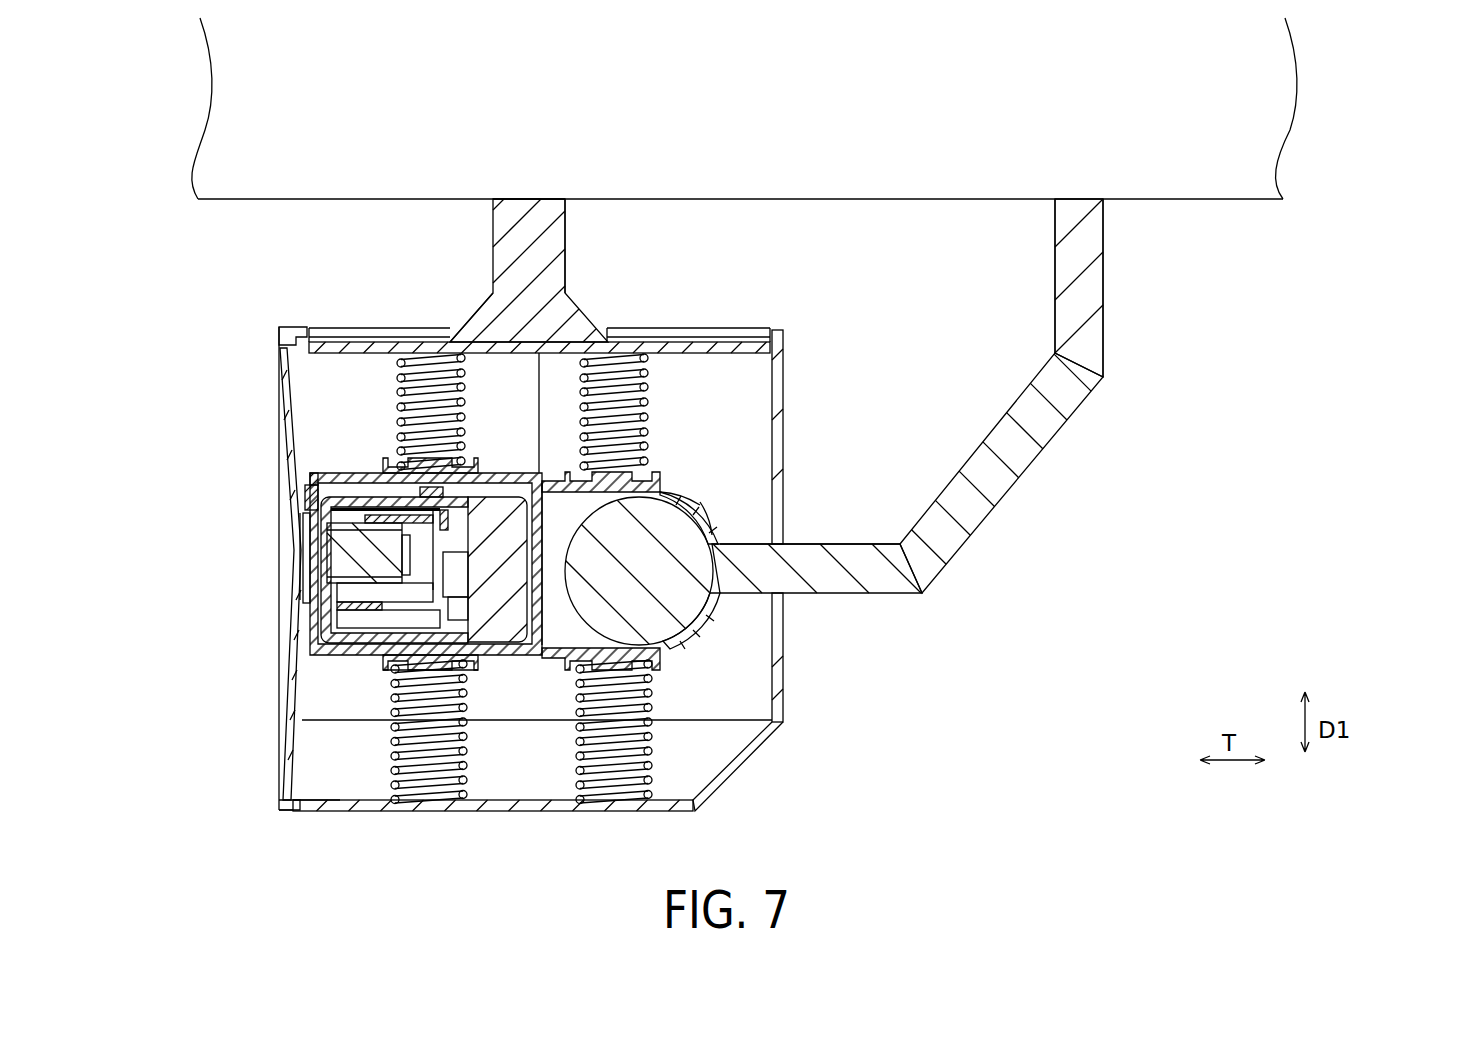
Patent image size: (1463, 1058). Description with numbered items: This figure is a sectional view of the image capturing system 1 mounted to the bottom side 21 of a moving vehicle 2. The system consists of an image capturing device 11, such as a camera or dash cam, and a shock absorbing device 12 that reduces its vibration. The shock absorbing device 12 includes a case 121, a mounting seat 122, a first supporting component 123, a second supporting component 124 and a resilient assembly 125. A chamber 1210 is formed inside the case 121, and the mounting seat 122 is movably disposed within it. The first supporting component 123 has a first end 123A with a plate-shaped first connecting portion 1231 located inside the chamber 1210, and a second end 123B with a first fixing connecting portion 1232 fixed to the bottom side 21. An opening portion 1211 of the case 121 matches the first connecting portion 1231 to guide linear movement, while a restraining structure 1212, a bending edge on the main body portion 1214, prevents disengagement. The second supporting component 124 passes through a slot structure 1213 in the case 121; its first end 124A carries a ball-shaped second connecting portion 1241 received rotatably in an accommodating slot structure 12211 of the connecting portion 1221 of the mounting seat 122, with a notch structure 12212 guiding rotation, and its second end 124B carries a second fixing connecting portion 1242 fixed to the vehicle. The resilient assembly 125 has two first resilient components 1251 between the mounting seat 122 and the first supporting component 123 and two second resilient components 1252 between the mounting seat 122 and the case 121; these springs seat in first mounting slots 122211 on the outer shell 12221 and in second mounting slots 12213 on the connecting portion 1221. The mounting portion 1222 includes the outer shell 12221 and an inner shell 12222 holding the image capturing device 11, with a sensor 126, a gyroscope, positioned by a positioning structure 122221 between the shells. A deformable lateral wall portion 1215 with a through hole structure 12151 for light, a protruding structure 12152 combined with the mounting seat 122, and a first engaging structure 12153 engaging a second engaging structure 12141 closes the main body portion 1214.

The image capturing system 1 is at (1045, 640).
The moving vehicle 2 is at (823, 151).
The bottom side of the moving vehicle 21 is at (1240, 199).
The image capturing device 11 is at (360, 548).
The shock absorbing device 12 is at (287, 312).
The case 121 is at (531, 558).
The chamber 1210 is at (714, 742).
The opening portion 1211 is at (733, 320).
The restraining structure 1212 is at (764, 330).
The slot structure 1213 is at (797, 488).
The main body portion 1214 is at (489, 811).
The second engaging structure 12141 is at (330, 811).
The lateral wall portion 1215 is at (290, 496).
The through hole structure 12151 is at (290, 570).
The protruding structure 12152 is at (305, 612).
The first engaging structure 12153 is at (297, 812).
The mounting seat 122 is at (489, 612).
The connecting portion 1221 is at (662, 650).
The accommodating slot structure 12211 is at (558, 628).
The notch structure 12212 is at (708, 515).
The second mounting slots 12213 is at (684, 484).
The mounting portion 1222 is at (315, 595).
The outer shell 12221 is at (353, 638).
The inner shell 12222 is at (383, 665).
The first mounting slots 122211 is at (395, 668).
The positioning structure 122221 is at (418, 490).
The first supporting component 123 is at (539, 229).
The first connecting portion 1231 is at (628, 350).
The first fixing connecting portion 1232 is at (540, 212).
The first end of the first supporting component 123A is at (424, 343).
The second end of the first supporting component 123B is at (529, 193).
The second supporting component 124 is at (871, 462).
The second connecting portion 1241 is at (660, 610).
The second fixing connecting portion 1242 is at (1085, 210).
The first end of the second supporting component 124A is at (720, 539).
The second end of the second supporting component 124B is at (1050, 212).
The resilient assembly 125 is at (458, 575).
The first resilient components 1251 is at (388, 372).
The second resilient components 1252 is at (422, 790).
The sensor 126 is at (392, 458).